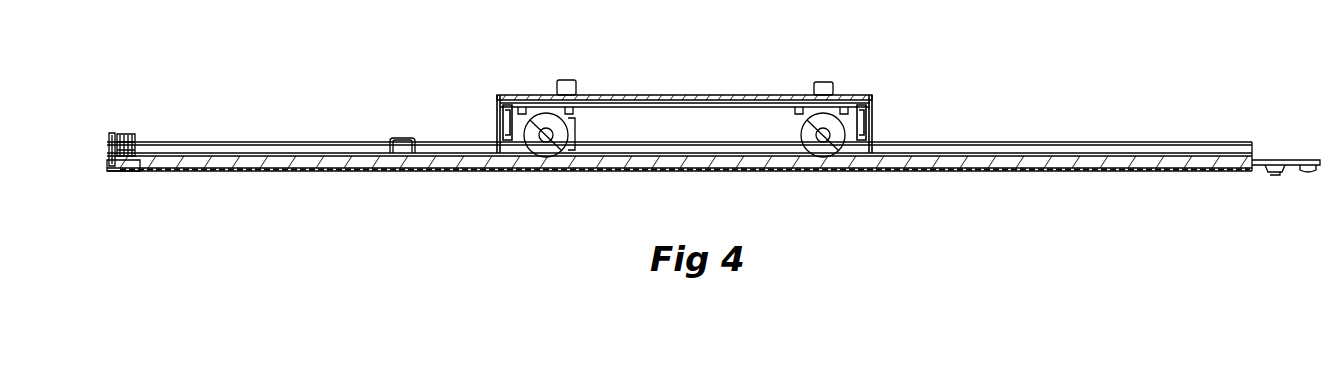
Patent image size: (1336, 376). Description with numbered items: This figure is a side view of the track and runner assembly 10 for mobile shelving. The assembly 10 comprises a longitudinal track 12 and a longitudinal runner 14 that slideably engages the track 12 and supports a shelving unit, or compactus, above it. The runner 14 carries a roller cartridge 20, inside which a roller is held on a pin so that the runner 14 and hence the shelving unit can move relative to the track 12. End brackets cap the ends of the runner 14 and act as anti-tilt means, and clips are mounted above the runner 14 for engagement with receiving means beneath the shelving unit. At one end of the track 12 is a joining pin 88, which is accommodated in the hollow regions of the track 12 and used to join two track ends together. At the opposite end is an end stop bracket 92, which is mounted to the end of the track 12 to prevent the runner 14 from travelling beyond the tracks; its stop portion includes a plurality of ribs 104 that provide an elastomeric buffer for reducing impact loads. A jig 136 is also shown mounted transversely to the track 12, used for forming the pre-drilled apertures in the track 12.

The track and runner assembly 10 is at (1037, 94).
The longitudinal track 12 is at (288, 134).
The longitudinal runner 14 is at (706, 94).
The roller cartridge 20 is at (584, 132).
The joining pin 88 is at (1295, 158).
The end stop bracket 92 is at (106, 157).
The ribs 104 is at (125, 134).
The jig 136 is at (403, 134).